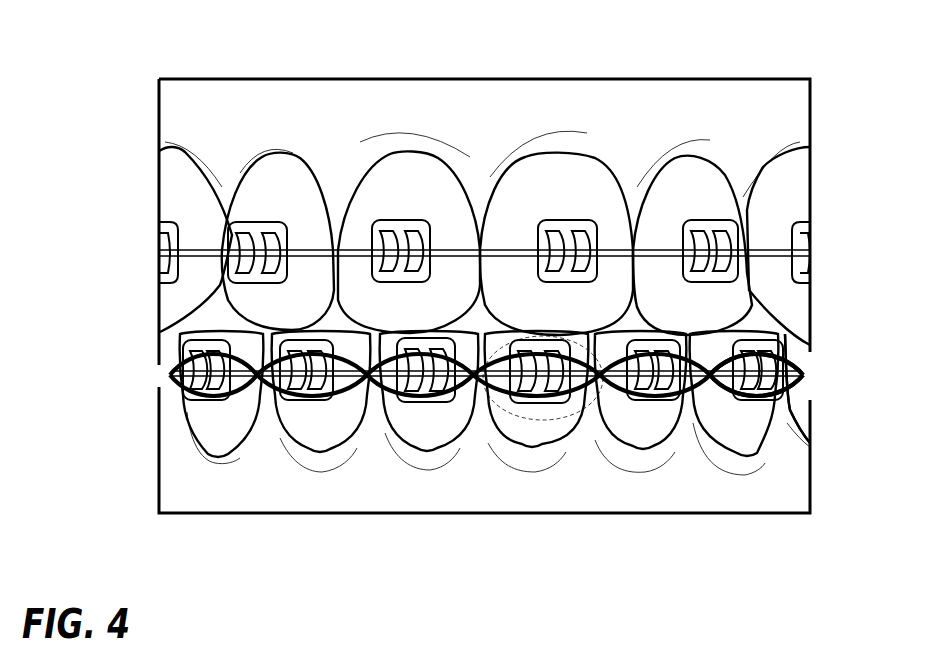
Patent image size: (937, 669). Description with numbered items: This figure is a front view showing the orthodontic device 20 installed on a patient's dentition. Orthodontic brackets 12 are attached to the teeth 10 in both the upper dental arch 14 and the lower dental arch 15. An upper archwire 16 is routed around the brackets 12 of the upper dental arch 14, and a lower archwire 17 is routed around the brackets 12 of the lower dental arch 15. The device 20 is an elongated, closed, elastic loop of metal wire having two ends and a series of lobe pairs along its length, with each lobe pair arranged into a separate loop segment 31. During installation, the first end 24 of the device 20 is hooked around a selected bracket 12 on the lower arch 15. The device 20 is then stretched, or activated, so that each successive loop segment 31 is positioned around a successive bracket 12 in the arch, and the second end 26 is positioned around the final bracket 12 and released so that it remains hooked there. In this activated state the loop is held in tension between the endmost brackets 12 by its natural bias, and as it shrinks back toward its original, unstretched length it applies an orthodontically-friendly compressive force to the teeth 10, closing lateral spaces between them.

The teeth 10 is at (257, 167).
The orthodontic brackets 12 is at (260, 227).
The upper dental arch 14 is at (130, 208).
The lower dental arch 15 is at (133, 390).
The upper archwire 16 is at (757, 257).
The lower archwire 17 is at (737, 400).
The orthodontic device 20 is at (183, 360).
The first end 24 is at (177, 372).
The second end 26 is at (800, 367).
The loop segment 31 is at (517, 415).